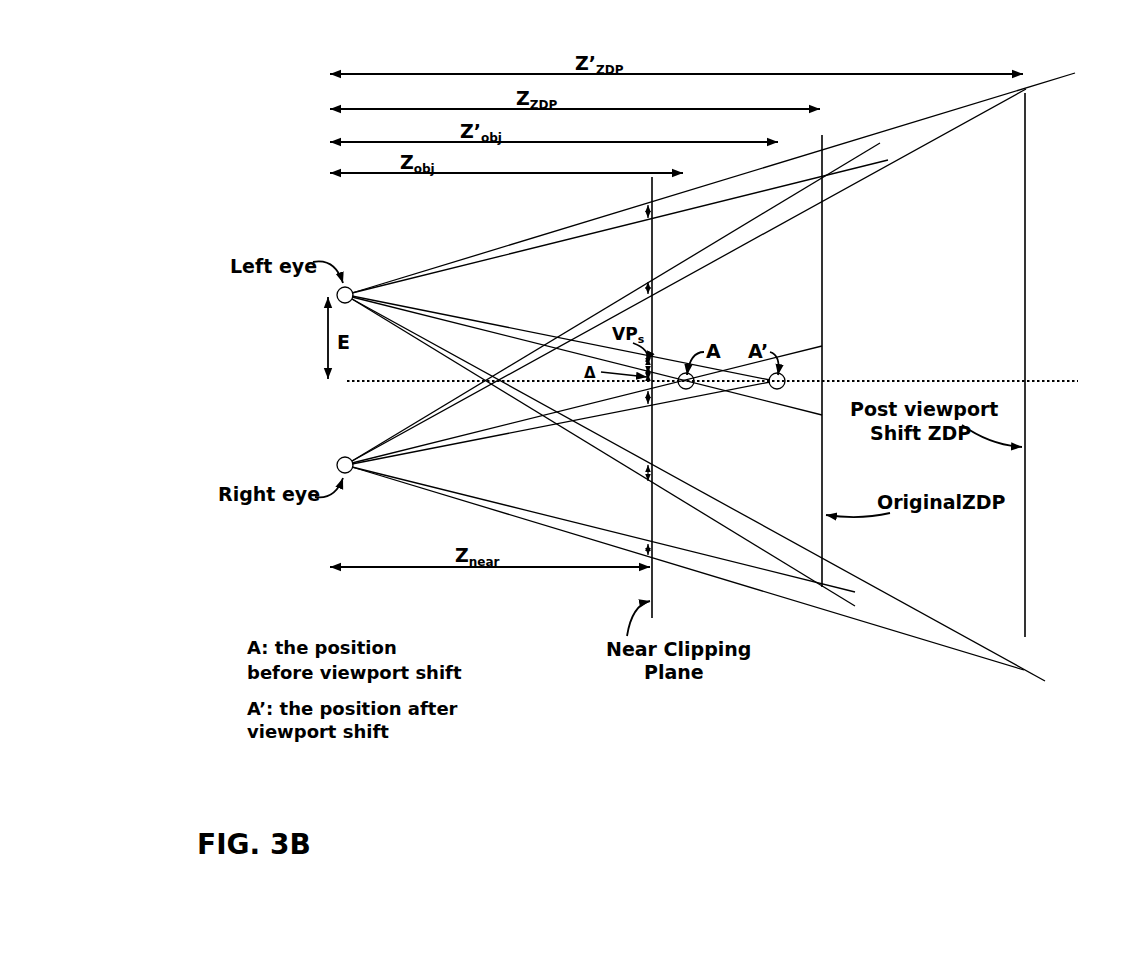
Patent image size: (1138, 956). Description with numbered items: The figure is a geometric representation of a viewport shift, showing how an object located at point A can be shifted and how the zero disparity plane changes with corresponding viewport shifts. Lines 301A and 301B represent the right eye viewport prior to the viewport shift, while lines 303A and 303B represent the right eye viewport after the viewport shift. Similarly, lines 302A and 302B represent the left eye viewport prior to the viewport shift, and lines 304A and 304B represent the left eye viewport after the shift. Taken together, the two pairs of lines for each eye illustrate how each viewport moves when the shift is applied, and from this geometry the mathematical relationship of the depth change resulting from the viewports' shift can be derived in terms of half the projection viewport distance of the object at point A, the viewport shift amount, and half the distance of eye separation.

The line 301A is at (822, 612).
The line 301B is at (857, 192).
The line 302A is at (906, 599).
The line 302B is at (1049, 86).
The line 303A is at (621, 527).
The line 303B is at (606, 304).
The line 304A is at (586, 449).
The line 304B is at (454, 268).